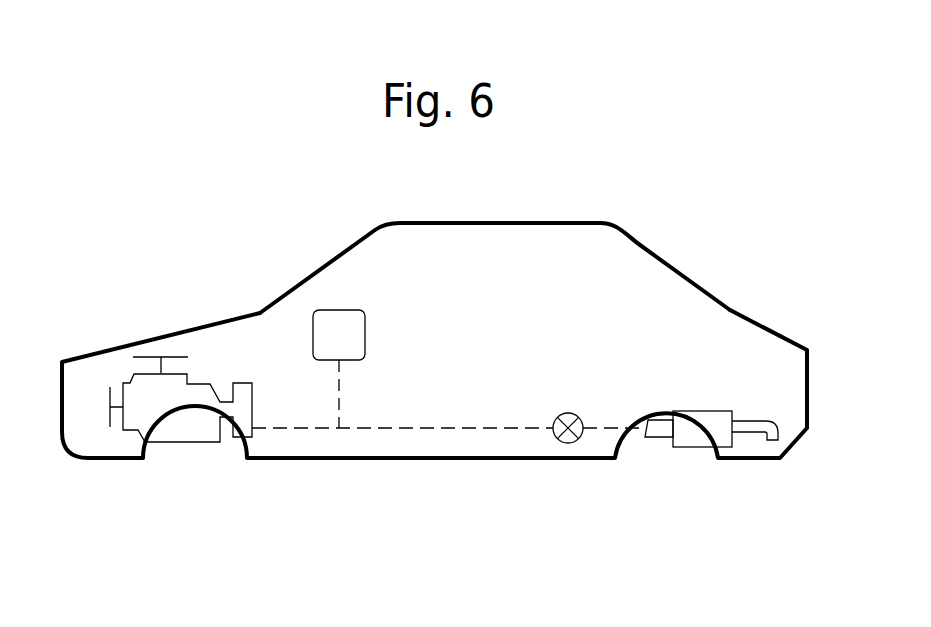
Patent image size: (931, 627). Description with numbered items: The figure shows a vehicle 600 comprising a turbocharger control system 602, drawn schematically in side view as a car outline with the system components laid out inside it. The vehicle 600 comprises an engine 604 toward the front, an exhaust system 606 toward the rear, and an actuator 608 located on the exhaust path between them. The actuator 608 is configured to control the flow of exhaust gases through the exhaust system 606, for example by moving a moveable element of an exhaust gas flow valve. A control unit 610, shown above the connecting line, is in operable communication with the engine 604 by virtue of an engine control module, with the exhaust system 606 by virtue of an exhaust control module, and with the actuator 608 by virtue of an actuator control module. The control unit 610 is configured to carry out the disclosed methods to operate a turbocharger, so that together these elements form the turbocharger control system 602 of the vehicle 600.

The vehicle 600 is at (293, 288).
The turbocharger control system 602 is at (495, 340).
The engine 604 is at (168, 443).
The exhaust system 606 is at (717, 410).
The actuator 608 is at (577, 415).
The control unit 610 is at (338, 310).